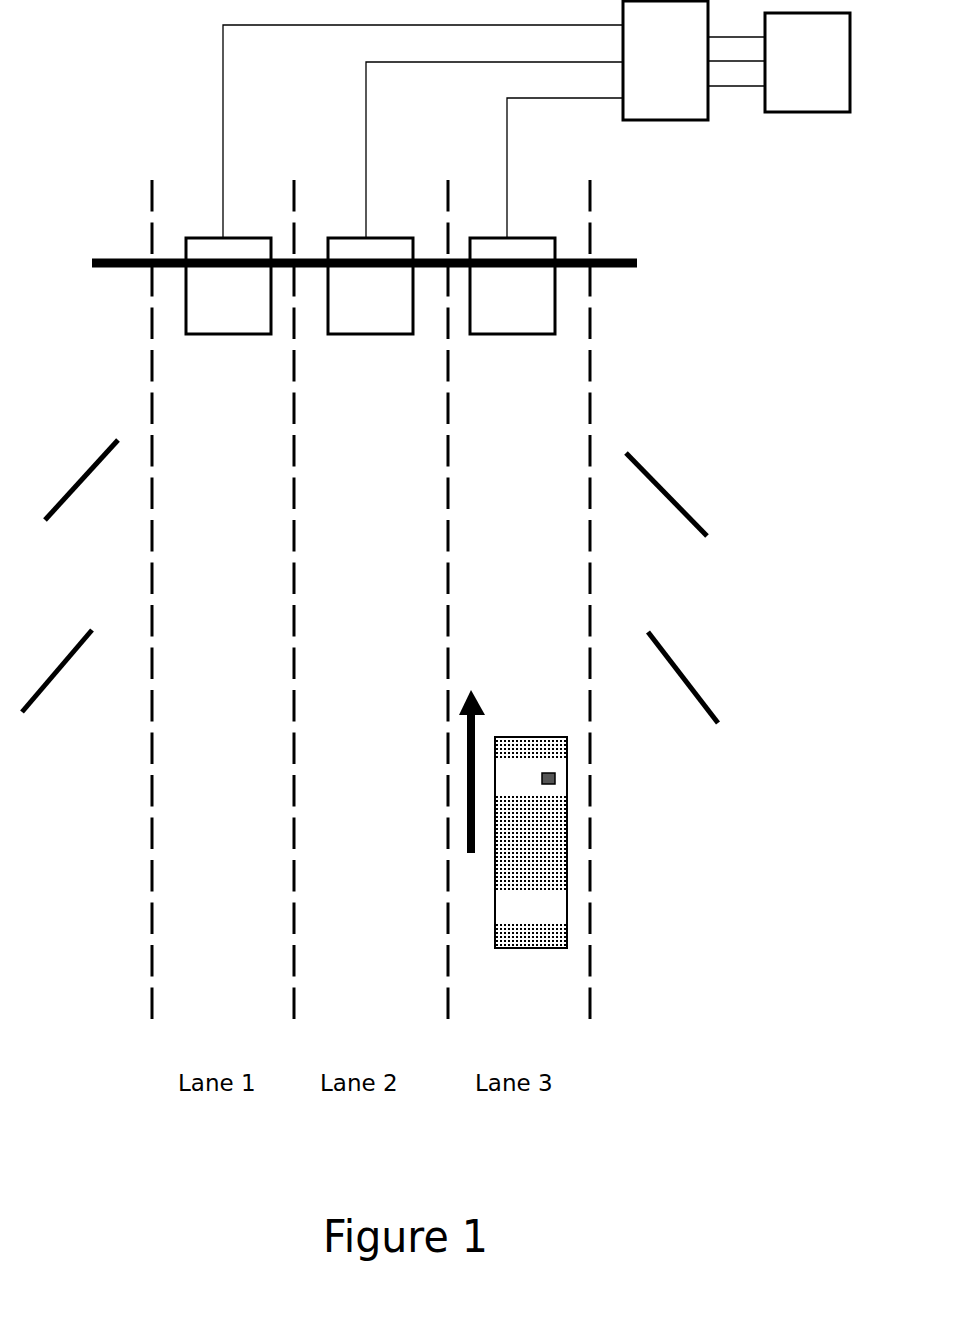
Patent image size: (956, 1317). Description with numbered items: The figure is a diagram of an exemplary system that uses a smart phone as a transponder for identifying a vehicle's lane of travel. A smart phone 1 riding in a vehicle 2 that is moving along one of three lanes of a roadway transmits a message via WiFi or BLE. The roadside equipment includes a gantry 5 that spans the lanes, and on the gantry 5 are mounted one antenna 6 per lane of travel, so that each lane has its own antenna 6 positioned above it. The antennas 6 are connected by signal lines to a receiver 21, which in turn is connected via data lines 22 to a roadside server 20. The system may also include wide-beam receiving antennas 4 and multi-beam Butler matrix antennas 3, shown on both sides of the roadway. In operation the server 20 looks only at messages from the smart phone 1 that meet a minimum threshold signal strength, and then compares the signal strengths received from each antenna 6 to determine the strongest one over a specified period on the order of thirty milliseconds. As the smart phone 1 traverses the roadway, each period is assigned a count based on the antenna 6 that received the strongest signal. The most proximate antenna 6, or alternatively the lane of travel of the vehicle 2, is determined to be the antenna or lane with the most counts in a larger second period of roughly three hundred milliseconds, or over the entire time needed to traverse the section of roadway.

The smart phone 1 is at (555, 775).
The vehicle 2 is at (508, 950).
The multi-beam Butler matrix antennas 3 is at (72, 647).
The wide-beam receiving antennas 4 is at (83, 470).
The gantry 5 is at (613, 272).
The antenna 6 is at (212, 238).
The roadside server 20 is at (780, 112).
The receiver 21 is at (651, 120).
The data lines 22 is at (733, 87).